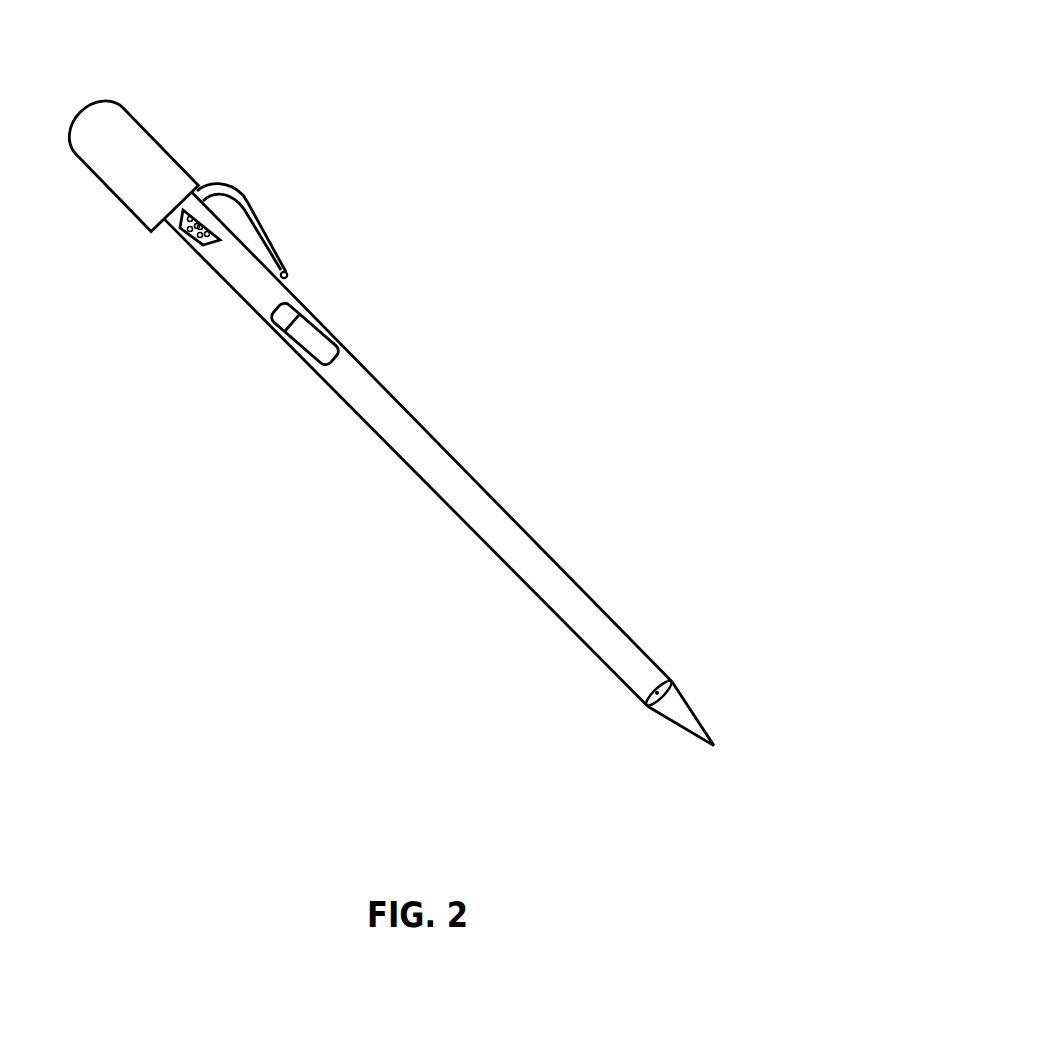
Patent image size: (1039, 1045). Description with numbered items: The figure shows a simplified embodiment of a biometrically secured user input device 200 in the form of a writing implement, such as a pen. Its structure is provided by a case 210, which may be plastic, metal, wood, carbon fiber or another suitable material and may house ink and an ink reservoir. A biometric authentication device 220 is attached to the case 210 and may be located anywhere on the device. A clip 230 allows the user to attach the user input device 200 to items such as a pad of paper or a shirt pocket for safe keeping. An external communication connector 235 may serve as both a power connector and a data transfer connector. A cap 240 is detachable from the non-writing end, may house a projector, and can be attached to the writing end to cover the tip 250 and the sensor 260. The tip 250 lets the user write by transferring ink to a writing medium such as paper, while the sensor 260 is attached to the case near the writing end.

The user input device 200 is at (898, 876).
The case 210 is at (366, 368).
The biometric authentication device 220 is at (302, 316).
The clip 230 is at (233, 188).
The external communication connector 235 is at (186, 244).
The cap 240 is at (122, 104).
The tip 250 is at (717, 746).
The sensor 260 is at (668, 680).